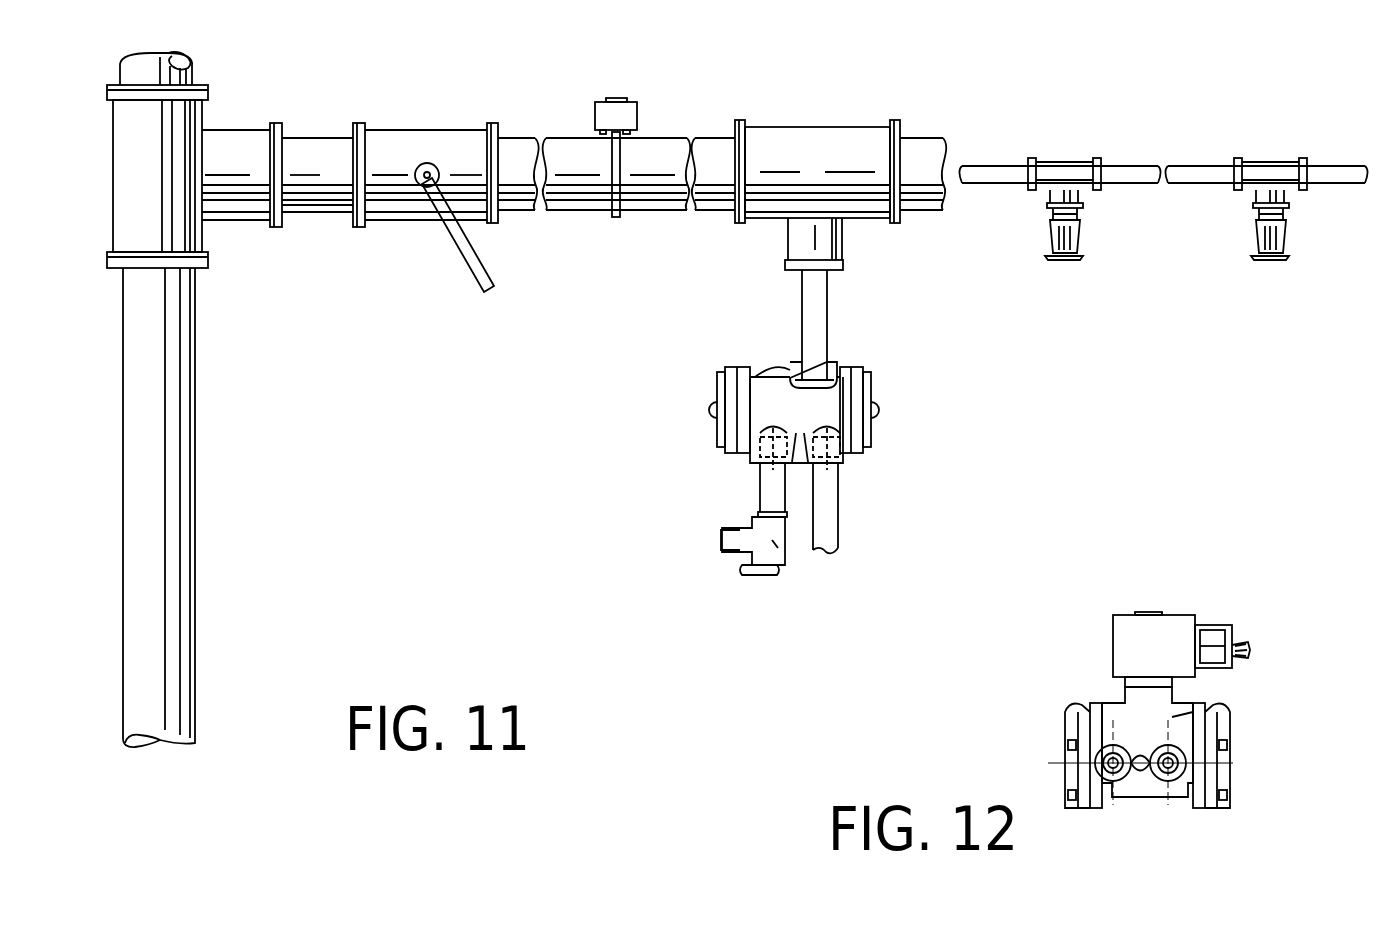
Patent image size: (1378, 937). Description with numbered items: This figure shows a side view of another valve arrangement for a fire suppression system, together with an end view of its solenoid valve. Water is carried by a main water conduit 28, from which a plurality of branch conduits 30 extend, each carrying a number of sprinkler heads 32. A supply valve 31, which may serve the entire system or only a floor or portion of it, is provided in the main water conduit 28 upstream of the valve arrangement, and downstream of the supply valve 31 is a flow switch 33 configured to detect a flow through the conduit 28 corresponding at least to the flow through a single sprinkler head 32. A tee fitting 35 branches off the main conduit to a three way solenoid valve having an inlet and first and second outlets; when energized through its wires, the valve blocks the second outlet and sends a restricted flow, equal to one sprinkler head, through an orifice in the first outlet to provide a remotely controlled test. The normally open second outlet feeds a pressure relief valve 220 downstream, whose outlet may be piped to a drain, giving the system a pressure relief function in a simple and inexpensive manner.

The main water conduit 28 is at (320, 137).
The supply valve 31 is at (453, 130).
The flow switch 33 is at (632, 98).
The tee fitting 35 is at (827, 127).
The branch conduit 30 is at (988, 165).
The sprinkler head 32 is at (1075, 213).
The pressure relief valve 220 is at (778, 568).